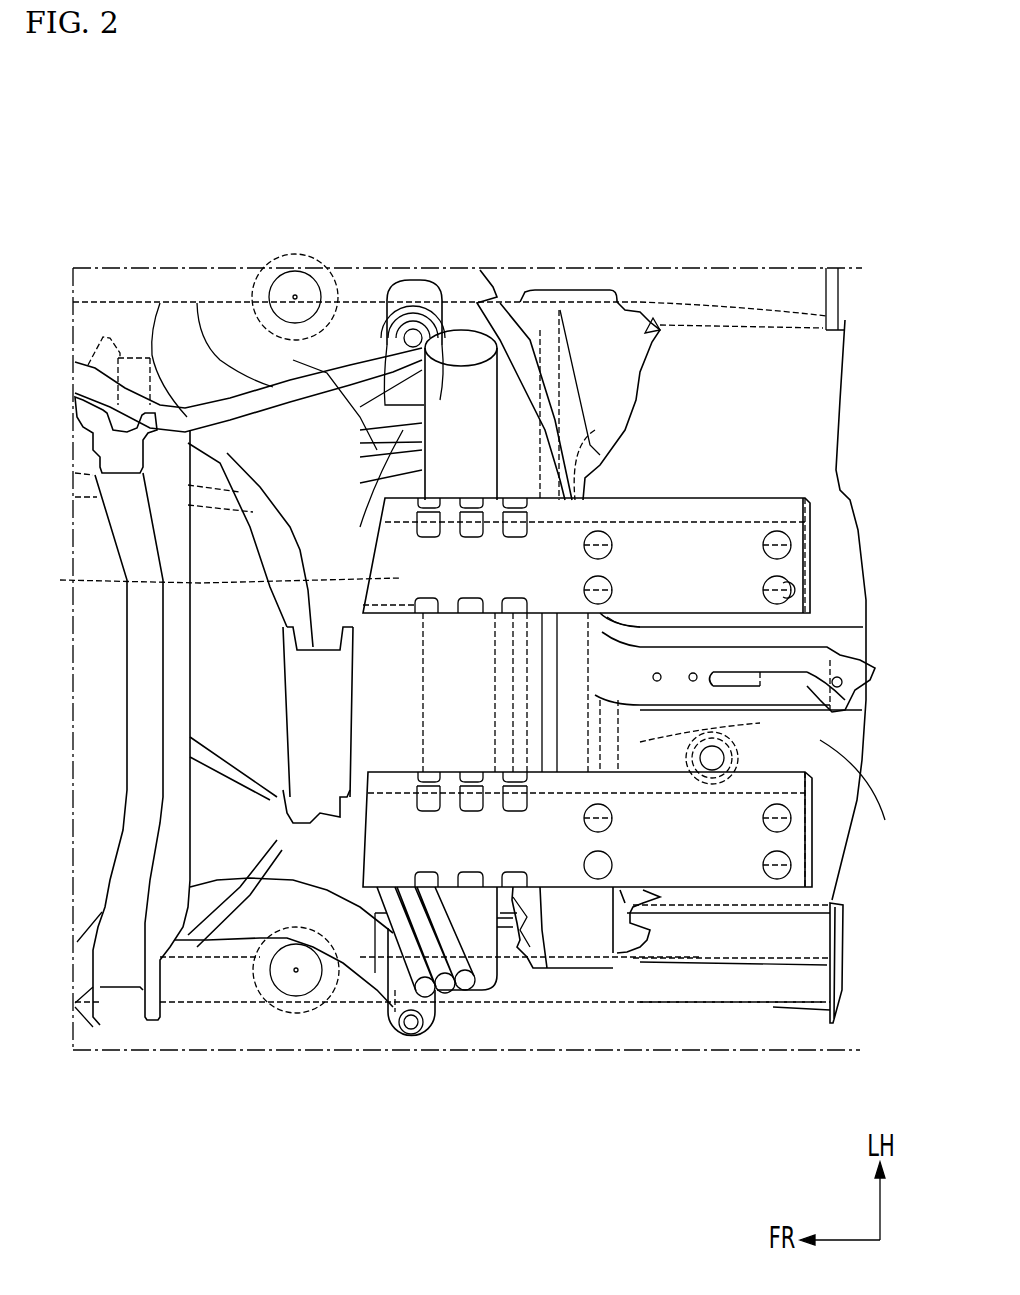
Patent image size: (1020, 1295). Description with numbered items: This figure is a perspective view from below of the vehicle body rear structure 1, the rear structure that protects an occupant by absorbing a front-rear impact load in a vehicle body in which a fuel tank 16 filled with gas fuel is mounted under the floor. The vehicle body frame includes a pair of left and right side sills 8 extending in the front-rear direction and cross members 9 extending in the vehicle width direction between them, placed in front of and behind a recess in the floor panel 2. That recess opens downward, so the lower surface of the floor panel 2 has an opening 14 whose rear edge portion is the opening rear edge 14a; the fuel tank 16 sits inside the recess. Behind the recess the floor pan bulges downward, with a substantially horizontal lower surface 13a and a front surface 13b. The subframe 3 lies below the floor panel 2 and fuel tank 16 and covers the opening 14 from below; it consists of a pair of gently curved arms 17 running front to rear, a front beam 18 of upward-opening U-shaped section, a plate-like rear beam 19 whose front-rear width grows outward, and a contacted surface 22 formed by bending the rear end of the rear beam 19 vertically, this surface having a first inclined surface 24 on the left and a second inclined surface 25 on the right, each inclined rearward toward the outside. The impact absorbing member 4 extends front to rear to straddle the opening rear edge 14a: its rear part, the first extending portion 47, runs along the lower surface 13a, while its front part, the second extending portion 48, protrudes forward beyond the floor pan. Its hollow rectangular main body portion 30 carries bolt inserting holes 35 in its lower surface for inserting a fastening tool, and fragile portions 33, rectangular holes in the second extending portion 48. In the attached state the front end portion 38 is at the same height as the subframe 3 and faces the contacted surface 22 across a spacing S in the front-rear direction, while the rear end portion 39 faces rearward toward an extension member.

The vehicle body rear structure 1 is at (675, 169).
The floor panel 2 is at (878, 610).
The subframe 3 is at (512, 1004).
The impact absorbing member 4 is at (759, 749).
The side sill 8 is at (259, 651).
The cross member 9 is at (461, 345).
The lower surface of the floor pan 13a is at (763, 846).
The front surface of the floor pan 13b is at (615, 362).
The opening 14 is at (214, 633).
The opening rear edge 14a is at (547, 355).
The fuel tank 16 is at (226, 316).
The arm 17 is at (248, 666).
The front beam 18 is at (140, 727).
The rear beam 19 is at (335, 375).
The contacted surface 22 is at (753, 662).
The first inclined surface 24 is at (413, 314).
The second inclined surface 25 is at (411, 1020).
The main body portion 30 is at (744, 809).
The fragile portion 33 is at (776, 744).
The bolt inserting hole 35 is at (834, 584).
The front end portion 38 is at (225, 734).
The rear end portion 39 is at (822, 687).
The first extending portion 47 is at (587, 661).
The second extending portion 48 is at (520, 661).
The spacing S is at (372, 599).